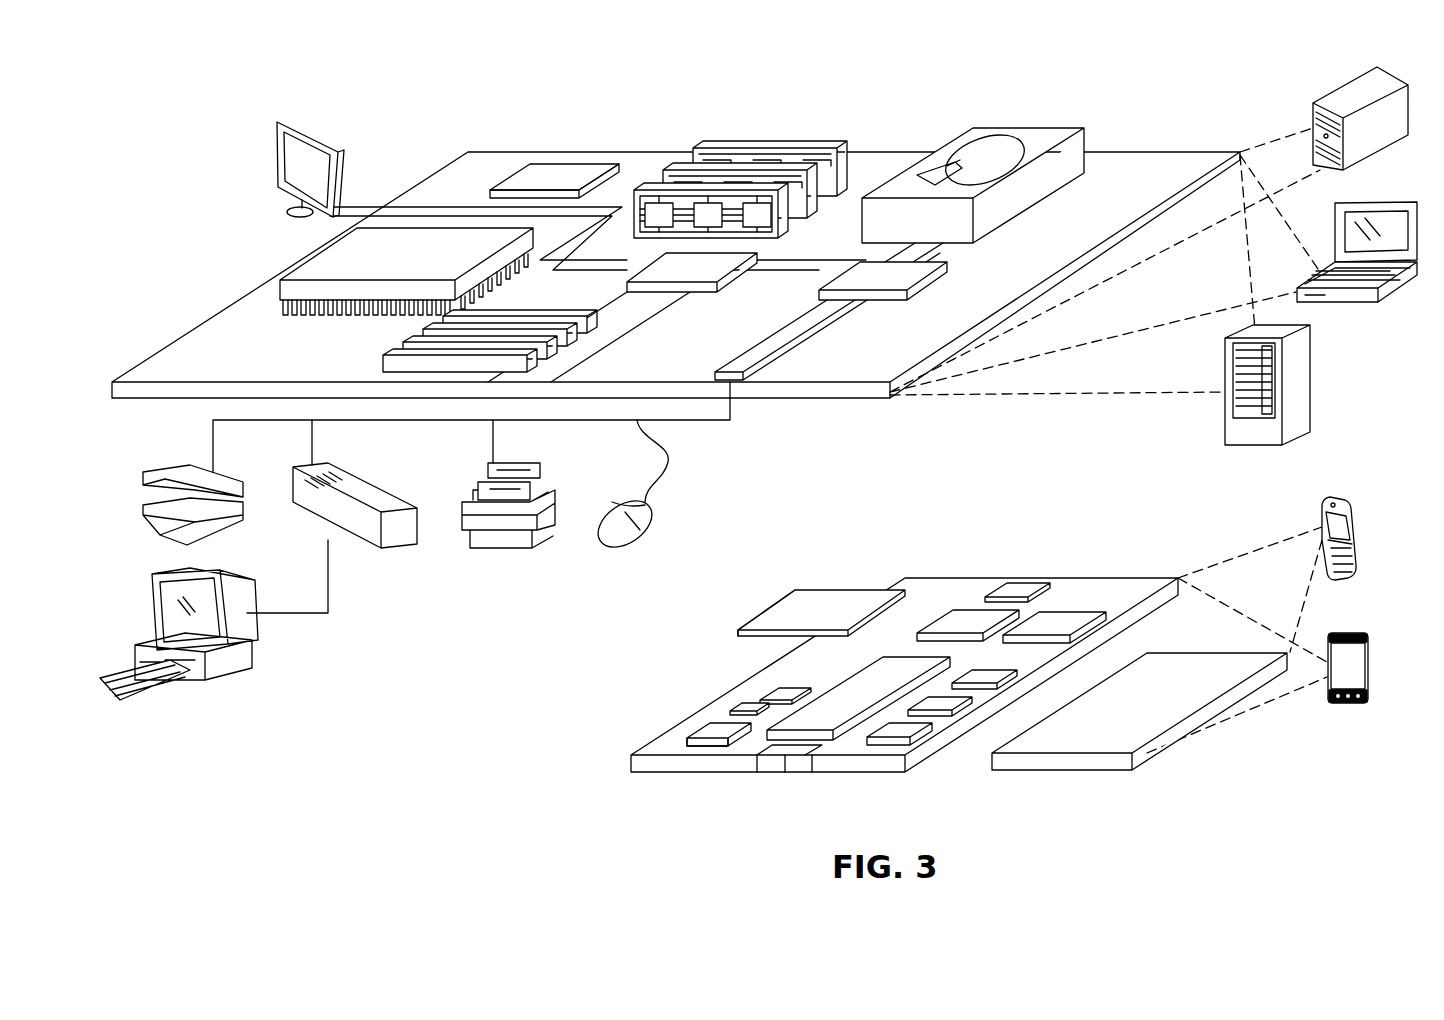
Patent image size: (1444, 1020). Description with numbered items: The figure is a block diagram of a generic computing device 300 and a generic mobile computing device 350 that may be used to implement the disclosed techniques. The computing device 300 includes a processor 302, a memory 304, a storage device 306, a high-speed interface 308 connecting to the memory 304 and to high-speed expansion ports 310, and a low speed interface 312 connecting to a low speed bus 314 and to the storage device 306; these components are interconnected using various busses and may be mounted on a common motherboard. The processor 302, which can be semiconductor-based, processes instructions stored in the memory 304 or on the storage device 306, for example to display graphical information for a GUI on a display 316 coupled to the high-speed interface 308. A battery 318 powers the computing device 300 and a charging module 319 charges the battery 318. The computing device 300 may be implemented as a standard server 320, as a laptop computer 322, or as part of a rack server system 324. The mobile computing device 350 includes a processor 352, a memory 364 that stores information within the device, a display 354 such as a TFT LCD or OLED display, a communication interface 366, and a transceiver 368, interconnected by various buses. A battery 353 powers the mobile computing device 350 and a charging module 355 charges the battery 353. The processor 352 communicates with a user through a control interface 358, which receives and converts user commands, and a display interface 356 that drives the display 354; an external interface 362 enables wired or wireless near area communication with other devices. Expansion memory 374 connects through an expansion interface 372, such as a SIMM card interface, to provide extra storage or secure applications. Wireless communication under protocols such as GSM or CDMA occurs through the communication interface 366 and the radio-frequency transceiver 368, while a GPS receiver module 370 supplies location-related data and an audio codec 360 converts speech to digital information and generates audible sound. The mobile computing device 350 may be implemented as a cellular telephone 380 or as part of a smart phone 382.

The computing device 300 is at (421, 103).
The processor 302 is at (305, 270).
The memory 304 is at (778, 152).
The storage device 306 is at (1020, 130).
The high-speed interface 308 is at (703, 263).
The high-speed expansion ports 310 is at (410, 348).
The low speed interface 312 is at (855, 274).
The low speed bus 314 is at (733, 372).
The display 316 is at (282, 122).
The battery 318 is at (517, 187).
The charging module 319 is at (552, 170).
The standard server 320 is at (1338, 96).
The laptop computer 322 is at (1393, 203).
The rack server system 324 is at (1312, 385).
The mobile computing device 350 is at (1196, 767).
The processor 352 is at (827, 705).
The battery 353 is at (700, 725).
The display 354 is at (1178, 670).
The charging module 355 is at (697, 743).
The display interface 356 is at (908, 730).
The control interface 358 is at (947, 702).
The audio codec 360 is at (990, 676).
The external interface 362 is at (785, 755).
The memory 364 is at (735, 712).
The communication interface 366 is at (963, 612).
The transceiver 368 is at (1060, 612).
The GPS receiver module 370 is at (1018, 590).
The expansion interface 372 is at (885, 592).
The expansion memory 374 is at (798, 592).
The cellular telephone 380 is at (1333, 505).
The smart phone 382 is at (1340, 632).